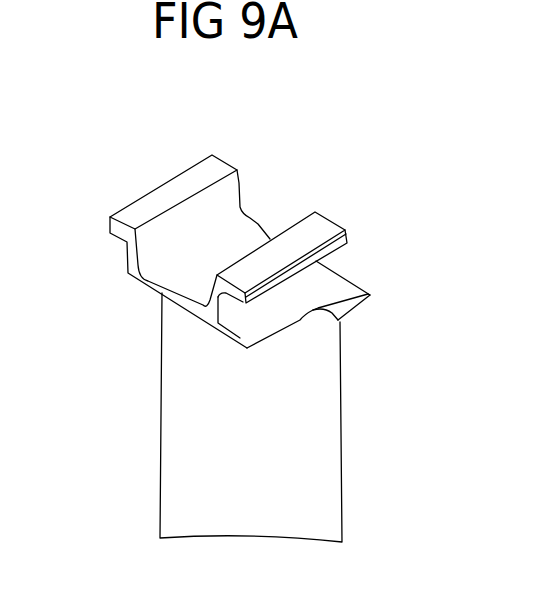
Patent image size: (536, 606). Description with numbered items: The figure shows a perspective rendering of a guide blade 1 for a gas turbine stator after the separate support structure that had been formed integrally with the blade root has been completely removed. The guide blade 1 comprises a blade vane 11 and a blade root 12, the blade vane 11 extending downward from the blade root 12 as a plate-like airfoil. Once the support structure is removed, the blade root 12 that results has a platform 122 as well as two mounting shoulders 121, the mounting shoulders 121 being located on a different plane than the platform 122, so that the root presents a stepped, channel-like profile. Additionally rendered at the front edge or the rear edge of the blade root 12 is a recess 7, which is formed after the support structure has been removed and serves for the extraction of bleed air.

The guide blade 1 is at (130, 380).
The recess 7 is at (316, 331).
The blade vane 11 is at (325, 462).
The blade root 12 is at (127, 268).
The mounting shoulders 121 is at (162, 192).
The platform 122 is at (158, 288).